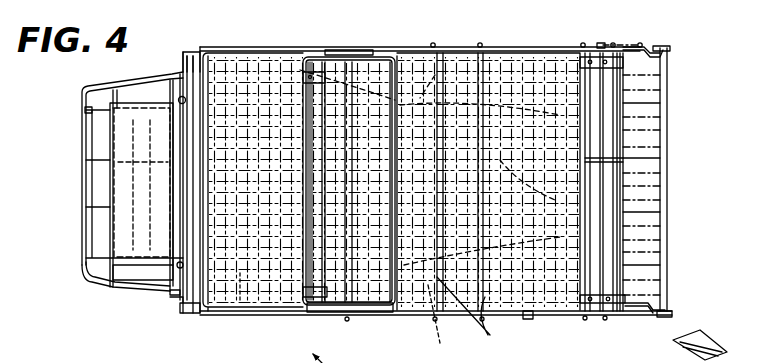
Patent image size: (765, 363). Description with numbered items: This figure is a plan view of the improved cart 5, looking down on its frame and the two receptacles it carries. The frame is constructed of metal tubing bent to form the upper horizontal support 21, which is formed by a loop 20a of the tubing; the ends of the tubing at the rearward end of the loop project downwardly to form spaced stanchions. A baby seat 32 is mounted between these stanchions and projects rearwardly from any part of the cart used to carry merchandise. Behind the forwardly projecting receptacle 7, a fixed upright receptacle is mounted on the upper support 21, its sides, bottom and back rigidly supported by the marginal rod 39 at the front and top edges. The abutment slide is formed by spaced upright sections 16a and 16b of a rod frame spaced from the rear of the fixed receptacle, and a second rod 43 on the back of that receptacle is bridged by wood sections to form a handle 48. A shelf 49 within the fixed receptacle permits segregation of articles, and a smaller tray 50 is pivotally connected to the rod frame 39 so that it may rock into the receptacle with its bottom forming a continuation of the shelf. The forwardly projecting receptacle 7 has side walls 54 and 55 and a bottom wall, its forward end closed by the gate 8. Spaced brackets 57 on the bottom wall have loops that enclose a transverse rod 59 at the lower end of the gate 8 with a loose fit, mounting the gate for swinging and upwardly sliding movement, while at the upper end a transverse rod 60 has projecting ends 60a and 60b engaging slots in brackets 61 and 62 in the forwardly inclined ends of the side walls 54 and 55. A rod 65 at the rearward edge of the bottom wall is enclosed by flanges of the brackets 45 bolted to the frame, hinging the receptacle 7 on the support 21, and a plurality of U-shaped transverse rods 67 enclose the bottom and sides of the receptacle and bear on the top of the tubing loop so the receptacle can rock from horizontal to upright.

The cart 5 is at (692, 188).
The forwardly projecting receptacle 7 is at (561, 28).
The gate 8 is at (665, 243).
The abutment slide section 16a is at (187, 52).
The abutment slide section 16b is at (193, 313).
The loop of metal tubing 20a is at (443, 67).
The upper horizontal support 21 is at (428, 283).
The baby seat 32 is at (80, 212).
The marginal rod 39 is at (245, 52).
The second rod 43 is at (183, 300).
The bracket 45 is at (301, 77).
The handle 48 is at (170, 293).
The shelf 49 is at (240, 273).
The tray 50 is at (390, 306).
The side wall 54 is at (500, 50).
The side wall 55 is at (303, 293).
The bracket 57 is at (612, 62).
The transverse rod 59 is at (625, 90).
The transverse rod 60 is at (665, 200).
The projecting end 60a is at (668, 58).
The projecting end 60b is at (670, 305).
The bracket 61 is at (658, 46).
The bracket 62 is at (658, 317).
The rod 65 is at (315, 232).
The U-shaped transverse rod 67 is at (468, 317).